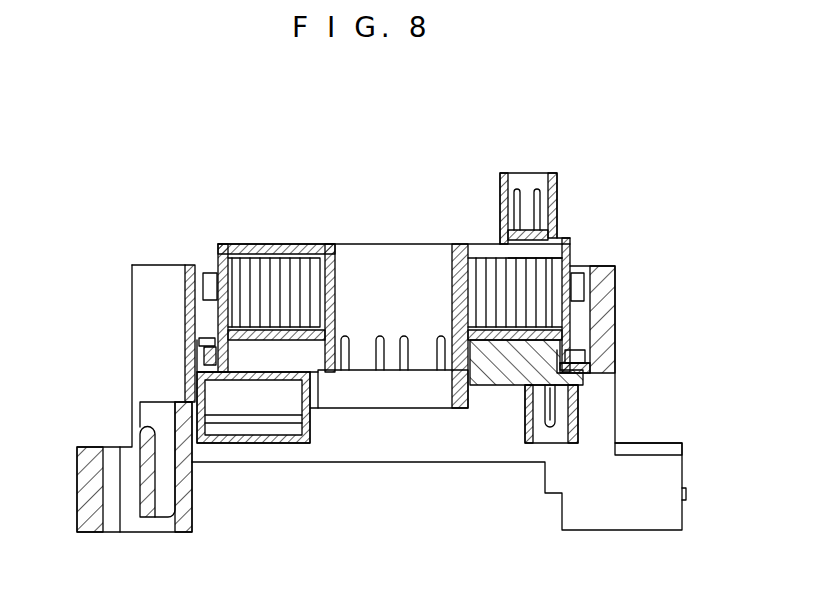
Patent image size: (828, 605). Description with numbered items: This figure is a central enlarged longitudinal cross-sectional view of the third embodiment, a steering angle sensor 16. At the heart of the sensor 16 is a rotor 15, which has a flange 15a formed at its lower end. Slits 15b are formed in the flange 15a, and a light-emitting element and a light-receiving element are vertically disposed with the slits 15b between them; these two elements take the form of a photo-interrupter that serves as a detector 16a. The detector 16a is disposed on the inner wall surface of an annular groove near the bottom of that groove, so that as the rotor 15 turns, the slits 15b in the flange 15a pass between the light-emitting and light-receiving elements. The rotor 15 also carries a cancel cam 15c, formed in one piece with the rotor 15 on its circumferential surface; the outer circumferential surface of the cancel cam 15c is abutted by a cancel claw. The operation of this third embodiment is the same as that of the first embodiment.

The rotor 15 is at (464, 238).
The flange 15a is at (197, 369).
The slits 15b is at (207, 343).
The cancel cam 15c is at (206, 273).
The steering angle sensor 16 is at (259, 452).
The detector 16a is at (208, 345).